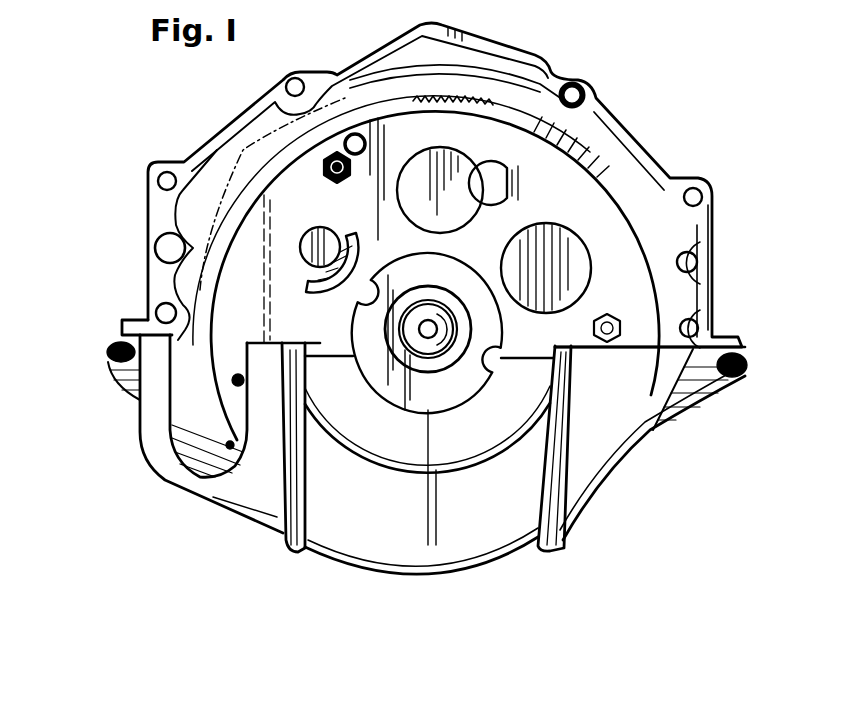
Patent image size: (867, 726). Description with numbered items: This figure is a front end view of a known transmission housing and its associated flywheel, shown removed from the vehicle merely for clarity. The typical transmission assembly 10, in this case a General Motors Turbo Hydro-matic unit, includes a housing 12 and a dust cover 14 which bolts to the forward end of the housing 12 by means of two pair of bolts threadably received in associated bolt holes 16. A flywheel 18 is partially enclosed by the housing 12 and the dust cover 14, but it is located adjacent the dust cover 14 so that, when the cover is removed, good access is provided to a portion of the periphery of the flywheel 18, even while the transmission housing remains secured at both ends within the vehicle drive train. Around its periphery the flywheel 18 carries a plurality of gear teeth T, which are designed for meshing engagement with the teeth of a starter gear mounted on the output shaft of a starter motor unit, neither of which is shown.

The transmission assembly 10 is at (687, 130).
The housing 12 is at (148, 214).
The dust cover 14 is at (626, 466).
The bolt holes 16 is at (112, 360).
The flywheel 18 is at (497, 135).
The gear teeth T is at (470, 100).